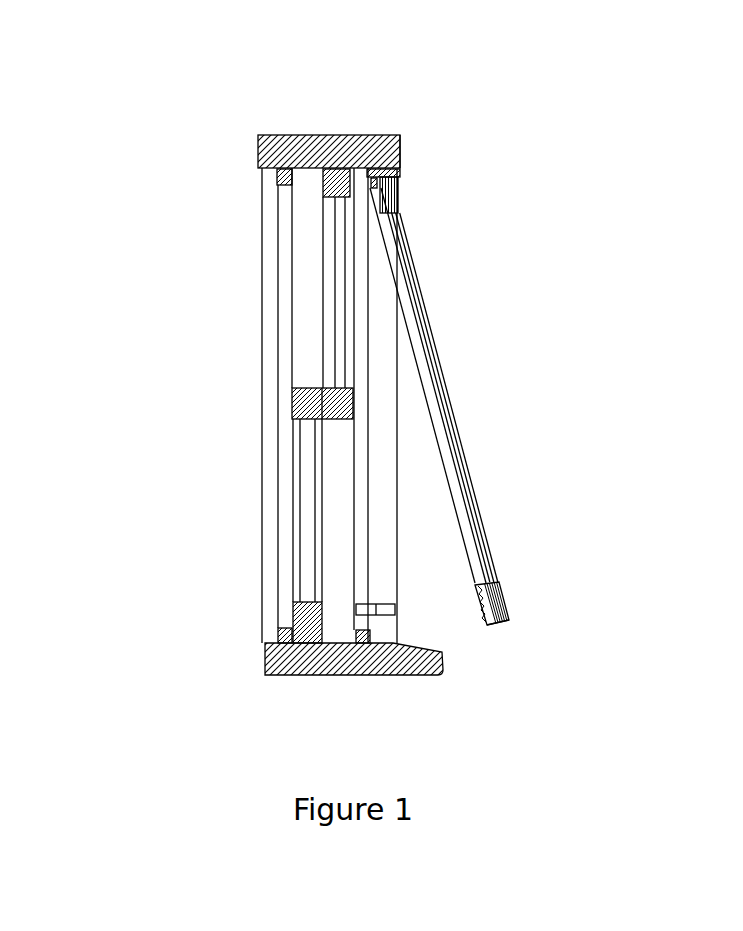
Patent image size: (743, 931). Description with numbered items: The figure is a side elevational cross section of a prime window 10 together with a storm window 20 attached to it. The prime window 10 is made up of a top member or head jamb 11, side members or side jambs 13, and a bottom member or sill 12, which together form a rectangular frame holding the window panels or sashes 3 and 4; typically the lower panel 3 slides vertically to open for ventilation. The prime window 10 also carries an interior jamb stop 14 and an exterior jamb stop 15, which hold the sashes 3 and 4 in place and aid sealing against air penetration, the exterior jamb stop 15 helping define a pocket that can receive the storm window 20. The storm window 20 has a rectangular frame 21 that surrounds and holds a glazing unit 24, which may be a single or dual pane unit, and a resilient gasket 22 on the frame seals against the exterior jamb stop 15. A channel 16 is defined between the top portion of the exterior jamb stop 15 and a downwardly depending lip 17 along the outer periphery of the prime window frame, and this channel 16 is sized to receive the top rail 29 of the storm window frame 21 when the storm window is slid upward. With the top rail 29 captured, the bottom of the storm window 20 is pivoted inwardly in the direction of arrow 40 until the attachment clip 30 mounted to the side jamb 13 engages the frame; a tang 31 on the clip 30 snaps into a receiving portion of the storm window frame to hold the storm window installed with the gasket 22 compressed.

The prime window 10 is at (352, 112).
The head jamb 11 is at (290, 133).
The sill 12 is at (267, 676).
The side jamb 13 is at (261, 230).
The interior jamb stop 14 is at (277, 502).
The exterior jamb stop 15 is at (362, 368).
The channel 16 is at (401, 172).
The downwardly depending lip 17 is at (401, 157).
The storm window 20 is at (423, 268).
The rectangular frame 21 is at (508, 595).
The resilient gasket 22 is at (488, 627).
The glazing unit 24 is at (463, 425).
The top rail 29 is at (392, 197).
The attachment clip 30 is at (393, 601).
The tang 31 is at (383, 512).
The lower panel 3 is at (291, 408).
The window panel 4 is at (321, 199).
The arrow 40 is at (462, 599).